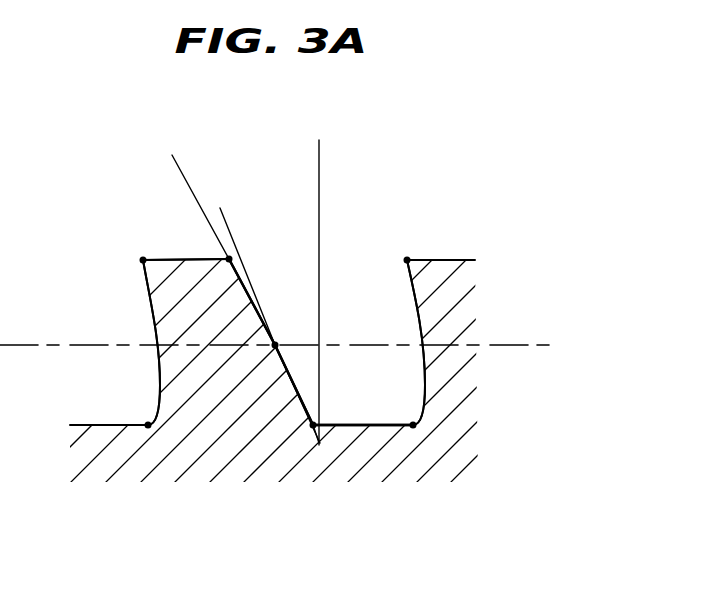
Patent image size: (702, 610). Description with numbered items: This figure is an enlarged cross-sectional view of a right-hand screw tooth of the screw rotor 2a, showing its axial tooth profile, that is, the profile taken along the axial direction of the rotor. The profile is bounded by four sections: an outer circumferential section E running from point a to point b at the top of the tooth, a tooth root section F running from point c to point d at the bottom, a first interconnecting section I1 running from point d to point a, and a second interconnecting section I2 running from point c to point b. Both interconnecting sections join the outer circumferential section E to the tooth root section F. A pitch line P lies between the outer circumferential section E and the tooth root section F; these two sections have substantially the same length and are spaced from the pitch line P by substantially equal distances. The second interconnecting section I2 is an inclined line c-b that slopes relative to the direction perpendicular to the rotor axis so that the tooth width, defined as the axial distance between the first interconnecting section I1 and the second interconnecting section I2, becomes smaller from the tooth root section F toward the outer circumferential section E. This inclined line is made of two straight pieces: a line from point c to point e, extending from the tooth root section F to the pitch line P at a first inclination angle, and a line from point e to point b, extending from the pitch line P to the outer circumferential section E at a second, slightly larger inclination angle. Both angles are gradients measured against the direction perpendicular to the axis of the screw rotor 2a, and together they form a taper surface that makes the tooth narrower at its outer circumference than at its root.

The screw rotor 2a is at (396, 224).
The first interconnecting section I1 is at (149, 311).
The second interconnecting section I2 is at (255, 287).
The pitch line P is at (527, 344).
The outer circumferential section E is at (168, 259).
The tooth root section F is at (376, 425).
The point a is at (275, 246).
The point b is at (215, 248).
The point c is at (320, 414).
The point d is at (272, 413).
The point e is at (285, 333).